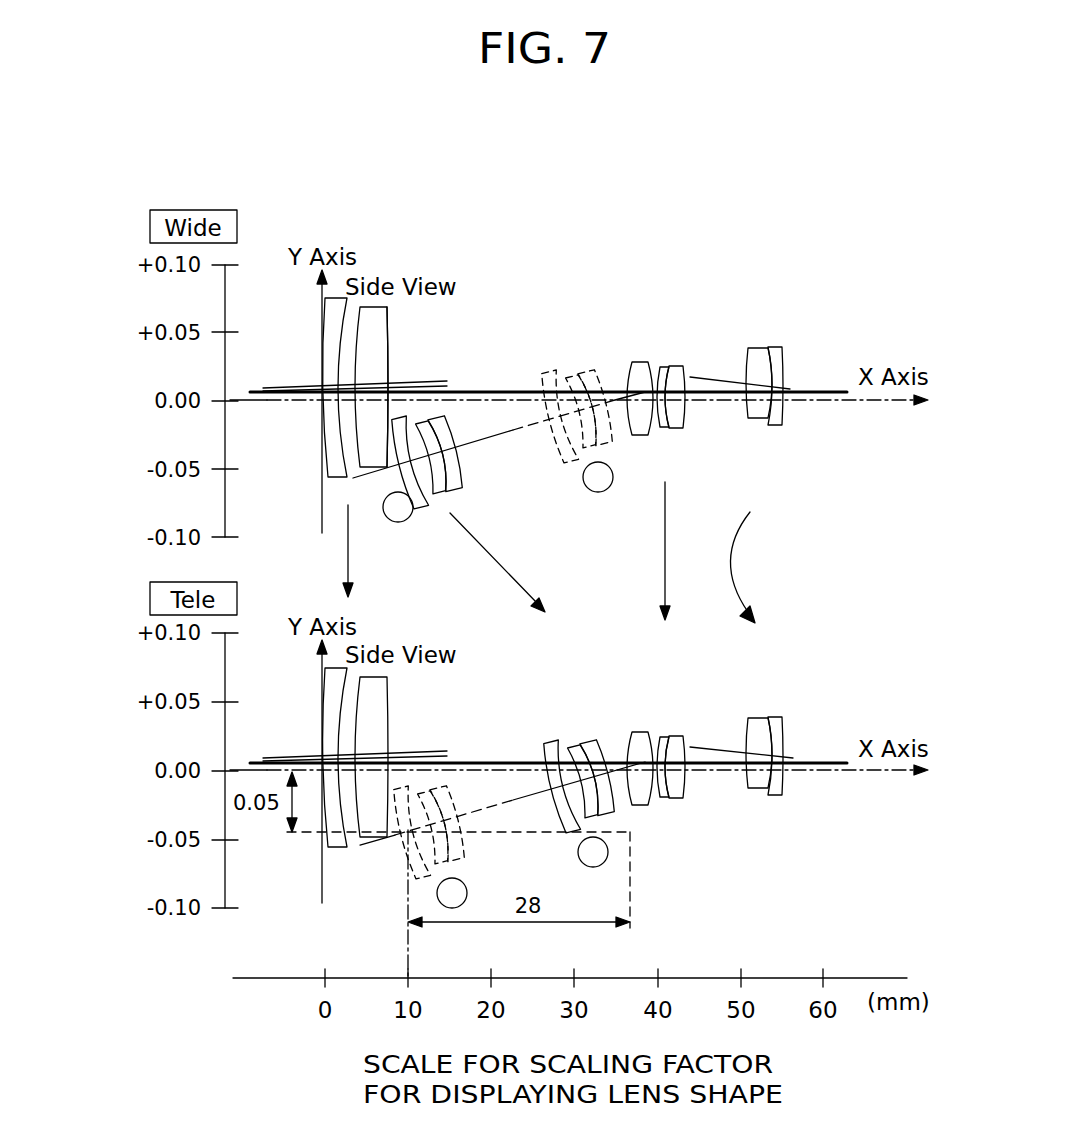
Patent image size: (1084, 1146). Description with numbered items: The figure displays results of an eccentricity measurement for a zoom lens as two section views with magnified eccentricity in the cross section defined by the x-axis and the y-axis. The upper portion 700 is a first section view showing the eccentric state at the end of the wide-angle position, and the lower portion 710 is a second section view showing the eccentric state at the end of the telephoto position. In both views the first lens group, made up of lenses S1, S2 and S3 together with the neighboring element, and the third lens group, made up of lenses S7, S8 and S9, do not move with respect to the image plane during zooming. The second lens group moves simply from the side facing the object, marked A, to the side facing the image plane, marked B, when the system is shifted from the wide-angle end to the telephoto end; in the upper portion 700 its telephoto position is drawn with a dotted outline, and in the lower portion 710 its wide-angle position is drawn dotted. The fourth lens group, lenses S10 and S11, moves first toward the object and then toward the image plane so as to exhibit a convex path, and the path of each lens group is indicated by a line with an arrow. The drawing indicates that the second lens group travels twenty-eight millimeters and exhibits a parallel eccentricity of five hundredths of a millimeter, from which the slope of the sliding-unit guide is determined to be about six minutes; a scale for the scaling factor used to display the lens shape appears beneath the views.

The upper portion 700 is at (120, 377).
The lower portion 710 is at (120, 747).
The lens S1 is at (323, 329).
The lens S2 is at (388, 316).
The lens S3 is at (388, 346).
The lens S7 is at (639, 361).
The lens S8 is at (666, 366).
The lens S9 is at (676, 428).
The lens S10 is at (757, 347).
The lens S11 is at (776, 346).